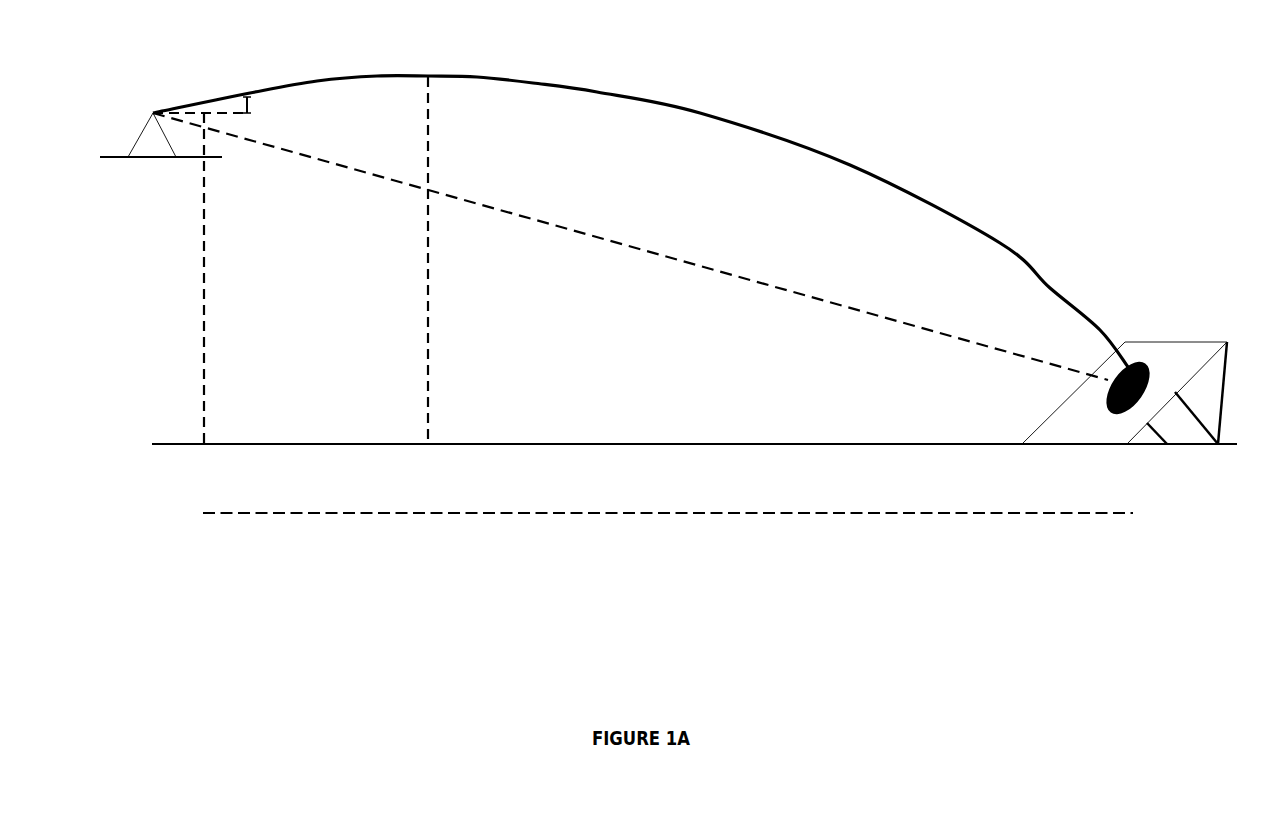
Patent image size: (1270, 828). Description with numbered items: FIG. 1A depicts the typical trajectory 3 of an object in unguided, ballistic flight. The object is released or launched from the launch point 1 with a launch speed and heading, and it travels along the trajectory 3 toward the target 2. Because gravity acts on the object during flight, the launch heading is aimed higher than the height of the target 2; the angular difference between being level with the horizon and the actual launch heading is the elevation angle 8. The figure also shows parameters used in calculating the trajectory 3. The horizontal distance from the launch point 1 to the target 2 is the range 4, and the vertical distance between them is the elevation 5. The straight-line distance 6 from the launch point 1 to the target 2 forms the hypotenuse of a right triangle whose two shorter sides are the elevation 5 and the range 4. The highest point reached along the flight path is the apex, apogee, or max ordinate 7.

The launch point 1 is at (146, 153).
The target 2 is at (1081, 438).
The trajectory 3 is at (640, 210).
The range 4 is at (668, 536).
The elevation 5 is at (225, 278).
The straight-line distance 6 is at (630, 246).
The max ordinate 7 is at (443, 260).
The elevation angle 8 is at (208, 105).